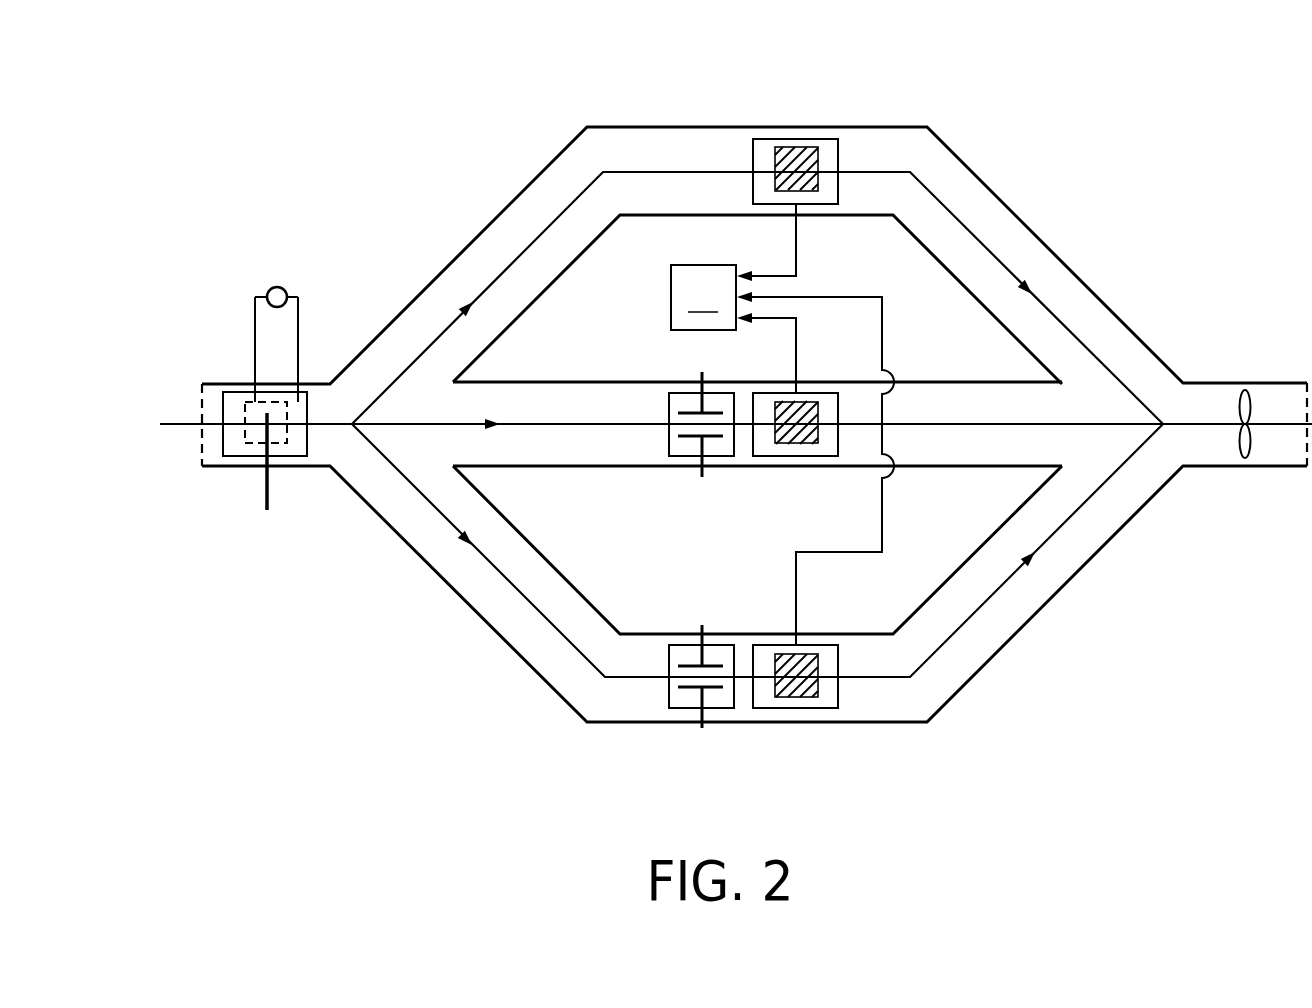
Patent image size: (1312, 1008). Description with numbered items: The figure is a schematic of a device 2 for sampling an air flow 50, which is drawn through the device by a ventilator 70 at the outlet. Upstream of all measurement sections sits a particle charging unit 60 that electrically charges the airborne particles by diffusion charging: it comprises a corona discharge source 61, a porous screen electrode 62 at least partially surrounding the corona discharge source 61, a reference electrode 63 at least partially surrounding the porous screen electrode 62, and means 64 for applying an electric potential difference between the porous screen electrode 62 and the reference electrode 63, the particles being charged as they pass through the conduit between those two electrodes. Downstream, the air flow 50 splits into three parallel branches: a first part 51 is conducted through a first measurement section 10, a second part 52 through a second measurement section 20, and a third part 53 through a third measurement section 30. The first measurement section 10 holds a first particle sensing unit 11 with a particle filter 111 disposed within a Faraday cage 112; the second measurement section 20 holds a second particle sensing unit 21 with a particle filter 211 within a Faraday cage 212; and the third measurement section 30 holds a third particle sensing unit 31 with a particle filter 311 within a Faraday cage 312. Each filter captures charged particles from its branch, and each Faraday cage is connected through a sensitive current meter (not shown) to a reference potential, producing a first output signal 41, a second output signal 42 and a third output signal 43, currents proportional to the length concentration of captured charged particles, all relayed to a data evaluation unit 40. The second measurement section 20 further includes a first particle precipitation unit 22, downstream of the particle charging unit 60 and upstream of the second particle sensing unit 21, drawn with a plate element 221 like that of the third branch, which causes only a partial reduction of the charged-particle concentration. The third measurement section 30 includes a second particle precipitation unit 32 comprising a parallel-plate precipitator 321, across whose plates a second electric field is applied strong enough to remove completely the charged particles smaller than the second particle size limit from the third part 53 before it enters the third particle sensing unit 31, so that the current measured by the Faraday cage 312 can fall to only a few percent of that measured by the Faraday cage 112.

The device 2 is at (352, 100).
The first measurement section 10 is at (615, 147).
The first particle sensing unit 11 is at (761, 147).
The particle filter 111 is at (811, 190).
The Faraday cage 112 is at (812, 150).
The second measurement section 20 is at (614, 452).
The second particle sensing unit 21 is at (767, 452).
The particle filter 211 is at (811, 403).
The Faraday cage 212 is at (811, 446).
The first particle precipitation unit 22 is at (683, 452).
The electrode plates 221 is at (683, 412).
The third measurement section 30 is at (614, 705).
The third particle sensing unit 31 is at (767, 706).
The particle filter 311 is at (811, 655).
The Faraday cage 312 is at (811, 700).
The second particle precipitation unit 32 is at (683, 706).
The parallel-plate precipitator 321 is at (683, 665).
The data evaluation unit 40 is at (703, 297).
The first output signal 41 is at (795, 242).
The second output signal 42 is at (795, 354).
The third output signal 43 is at (795, 582).
The air flow 50 is at (124, 439).
The first part of the air flow 51 is at (600, 176).
The second part of the air flow 52 is at (565, 422).
The third part of the air flow 53 is at (600, 674).
The particle charging unit 60 is at (233, 395).
The corona discharge source 61 is at (265, 498).
The porous screen electrode 62 is at (283, 402).
The reference electrode 63 is at (302, 460).
The means for applying an electric potential difference 64 is at (270, 287).
The ventilator 70 is at (1245, 388).